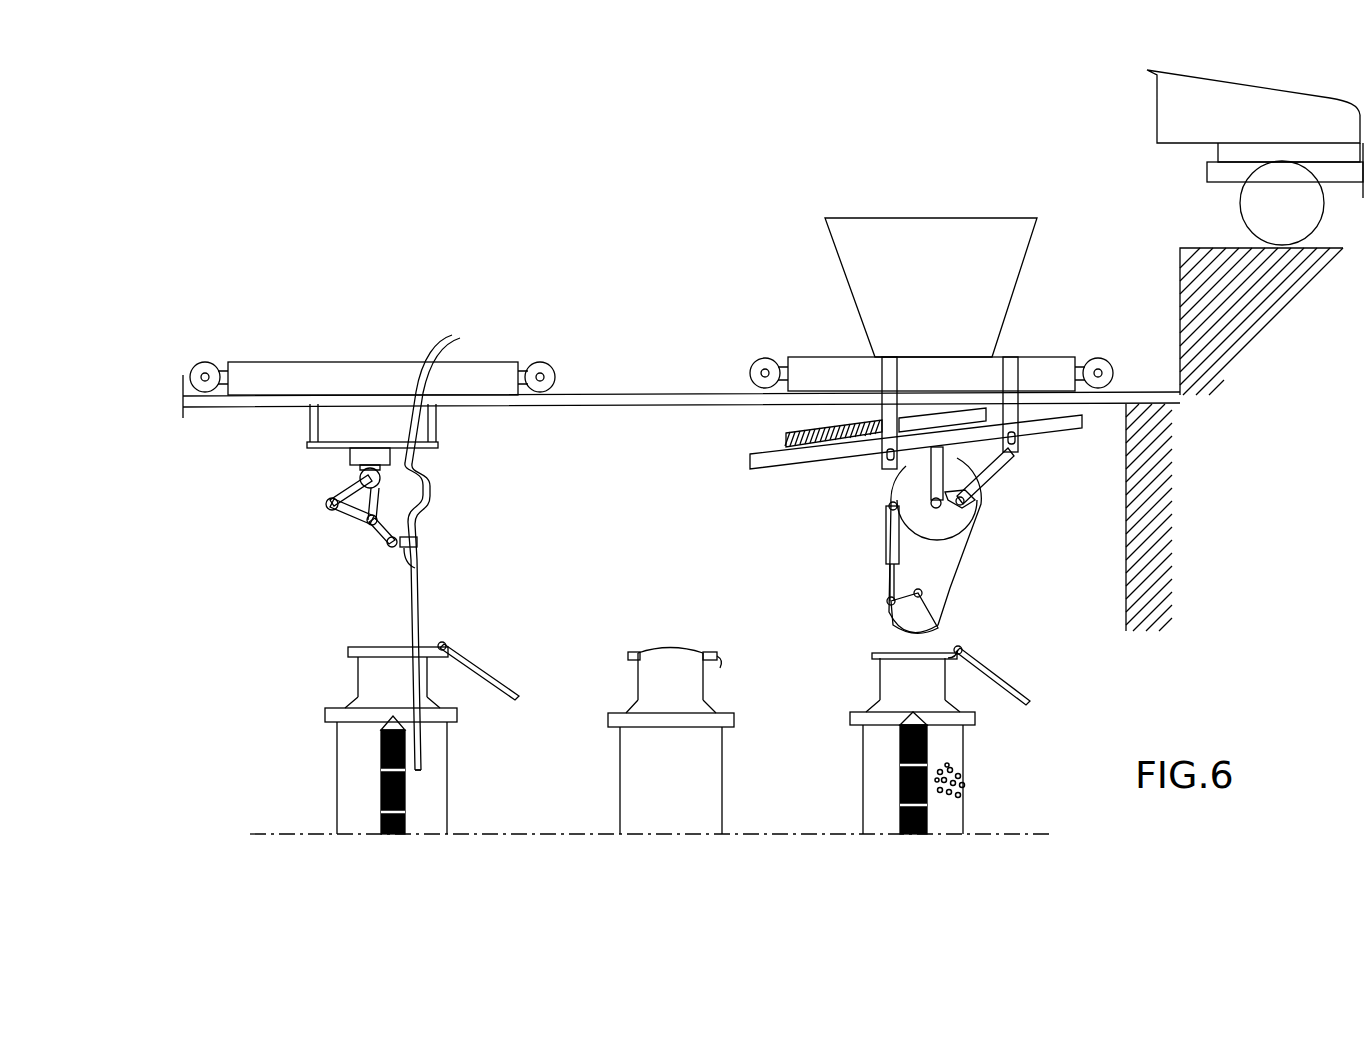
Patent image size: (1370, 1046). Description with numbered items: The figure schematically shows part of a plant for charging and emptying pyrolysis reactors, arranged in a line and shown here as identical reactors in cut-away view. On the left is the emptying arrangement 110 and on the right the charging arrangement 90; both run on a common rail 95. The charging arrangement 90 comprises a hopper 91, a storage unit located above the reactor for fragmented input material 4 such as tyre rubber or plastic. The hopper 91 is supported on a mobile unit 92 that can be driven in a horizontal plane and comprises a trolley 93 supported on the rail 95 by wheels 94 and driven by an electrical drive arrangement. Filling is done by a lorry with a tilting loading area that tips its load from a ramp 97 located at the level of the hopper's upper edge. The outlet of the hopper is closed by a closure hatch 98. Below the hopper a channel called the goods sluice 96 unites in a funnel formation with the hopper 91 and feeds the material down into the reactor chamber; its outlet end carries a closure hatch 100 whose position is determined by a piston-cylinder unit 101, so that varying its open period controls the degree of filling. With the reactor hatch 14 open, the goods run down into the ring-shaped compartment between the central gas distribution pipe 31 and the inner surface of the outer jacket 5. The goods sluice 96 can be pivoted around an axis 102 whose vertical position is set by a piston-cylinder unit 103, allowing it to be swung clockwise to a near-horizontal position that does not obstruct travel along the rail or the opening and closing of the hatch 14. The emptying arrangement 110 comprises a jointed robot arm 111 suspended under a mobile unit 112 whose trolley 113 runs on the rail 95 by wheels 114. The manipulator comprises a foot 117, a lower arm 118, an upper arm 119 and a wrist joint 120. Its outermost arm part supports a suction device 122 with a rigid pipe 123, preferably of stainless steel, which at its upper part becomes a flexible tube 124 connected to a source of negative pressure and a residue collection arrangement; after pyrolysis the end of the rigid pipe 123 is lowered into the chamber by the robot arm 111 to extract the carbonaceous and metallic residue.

The charging arrangement 90 is at (730, 181).
The emptying arrangement 110 is at (502, 251).
The hopper 91 is at (875, 232).
The mobile unit 92 is at (1090, 318).
The trolley 93 is at (815, 368).
The wheels 94 is at (760, 362).
The rail 95 is at (683, 400).
The goods sluice 96 is at (942, 568).
The ramp 97 is at (1208, 250).
The closure hatch 98 is at (858, 440).
The closure hatch 100 is at (905, 623).
The piston-cylinder unit 101 is at (888, 548).
The axis 102 is at (962, 508).
The piston-cylinder unit 103 is at (998, 475).
The robot arm 111 is at (320, 538).
The mobile unit 112 is at (530, 339).
The trolley 113 is at (263, 368).
The wheels 114 is at (205, 365).
The foot 117 is at (360, 457).
The lower arm 118 is at (362, 494).
The upper arm 119 is at (382, 538).
The wrist joint 120 is at (402, 565).
The suction device 122 is at (444, 746).
The rigid pipe 123 is at (420, 624).
The flexible tube 124 is at (436, 340).
The hatch 14 is at (1000, 672).
The input material 4 is at (960, 770).
The outer surface 5 is at (965, 802).
The central gas distribution pipe 31 is at (900, 803).